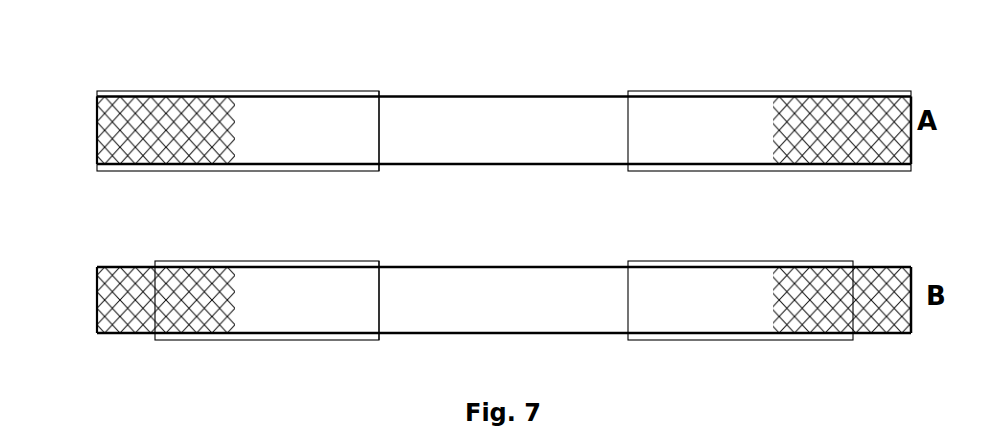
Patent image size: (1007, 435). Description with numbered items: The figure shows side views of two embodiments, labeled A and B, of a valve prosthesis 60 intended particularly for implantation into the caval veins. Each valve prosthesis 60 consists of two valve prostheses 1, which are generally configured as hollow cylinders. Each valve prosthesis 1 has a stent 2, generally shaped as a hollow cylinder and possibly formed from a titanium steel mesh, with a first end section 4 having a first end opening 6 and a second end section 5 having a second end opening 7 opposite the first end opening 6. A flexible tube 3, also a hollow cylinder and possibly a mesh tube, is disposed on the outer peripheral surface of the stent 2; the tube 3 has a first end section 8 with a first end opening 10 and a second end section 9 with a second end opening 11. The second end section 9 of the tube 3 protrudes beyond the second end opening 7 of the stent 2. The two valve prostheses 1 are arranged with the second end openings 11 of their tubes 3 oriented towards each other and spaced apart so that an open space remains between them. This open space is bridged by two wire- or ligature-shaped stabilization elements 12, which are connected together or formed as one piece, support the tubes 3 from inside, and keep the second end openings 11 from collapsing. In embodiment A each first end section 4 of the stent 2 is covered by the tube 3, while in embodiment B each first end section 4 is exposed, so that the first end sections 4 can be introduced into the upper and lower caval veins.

The valve prosthesis 1 is at (272, 70).
The stent 2 is at (137, 145).
The flexible tube 3 is at (238, 165).
The first end section 4 is at (108, 150).
The second end section 5 is at (197, 140).
The first end opening 6 is at (88, 138).
The second end opening 7 is at (217, 137).
The first end section 8 is at (128, 92).
The second end section 9 is at (320, 165).
The first end opening 10 is at (86, 157).
The second end opening 11 is at (365, 143).
The wire- or ligature-shaped stabilization elements 12 is at (567, 96).
The valve prosthesis 60 is at (646, 64).